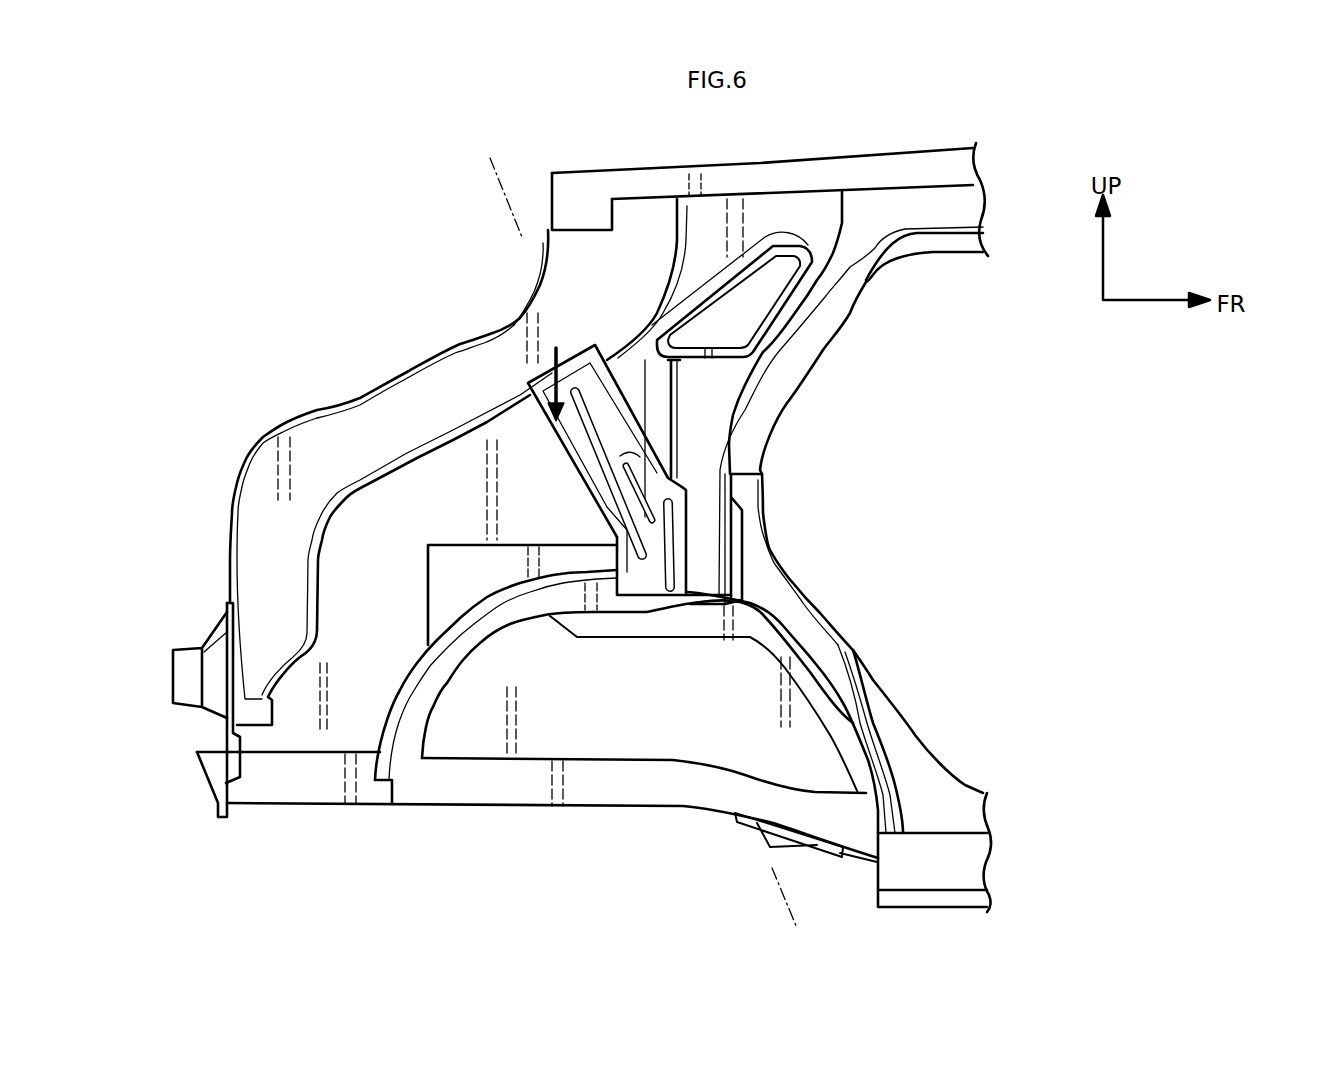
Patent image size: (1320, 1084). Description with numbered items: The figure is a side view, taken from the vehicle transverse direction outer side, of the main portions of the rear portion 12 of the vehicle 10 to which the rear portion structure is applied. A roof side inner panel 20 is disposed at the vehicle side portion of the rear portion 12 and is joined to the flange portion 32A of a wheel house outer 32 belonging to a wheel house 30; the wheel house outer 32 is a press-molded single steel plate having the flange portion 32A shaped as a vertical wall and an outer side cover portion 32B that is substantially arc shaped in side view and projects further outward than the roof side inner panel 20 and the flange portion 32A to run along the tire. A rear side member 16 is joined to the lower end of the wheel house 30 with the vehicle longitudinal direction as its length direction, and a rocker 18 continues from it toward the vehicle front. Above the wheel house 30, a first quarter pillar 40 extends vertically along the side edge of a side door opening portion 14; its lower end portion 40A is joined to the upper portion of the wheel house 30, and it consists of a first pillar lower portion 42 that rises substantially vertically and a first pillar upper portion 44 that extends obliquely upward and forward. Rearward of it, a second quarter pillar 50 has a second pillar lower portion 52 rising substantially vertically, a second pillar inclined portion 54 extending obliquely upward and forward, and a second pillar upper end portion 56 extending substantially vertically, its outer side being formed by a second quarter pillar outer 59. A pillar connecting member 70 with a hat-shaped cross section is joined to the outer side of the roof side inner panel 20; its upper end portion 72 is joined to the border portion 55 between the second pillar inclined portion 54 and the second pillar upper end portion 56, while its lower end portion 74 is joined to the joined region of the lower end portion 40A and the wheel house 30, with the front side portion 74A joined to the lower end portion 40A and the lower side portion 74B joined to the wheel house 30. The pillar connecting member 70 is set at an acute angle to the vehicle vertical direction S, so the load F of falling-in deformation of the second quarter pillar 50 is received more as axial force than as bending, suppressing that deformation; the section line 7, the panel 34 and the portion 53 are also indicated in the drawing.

The section line 7- 7 is at (508, 175).
The vehicle 10 is at (1065, 99).
The rear portion 12 is at (883, 127).
The side door opening portion 14 is at (962, 352).
The rear side member 16 is at (538, 800).
The rocker 18 is at (982, 861).
The roof side inner panel 20 is at (423, 460).
The wheel house 30 is at (653, 684).
The wheel house outer 32 is at (536, 627).
The flange portion 32A is at (443, 604).
The outer side cover portion 32B is at (473, 653).
The rocker panel 34 is at (623, 748).
The first quarter pillar 40 is at (719, 405).
The lower end portion 40A is at (704, 574).
The first pillar lower portion 42 is at (709, 440).
The first pillar upper portion 44 is at (823, 297).
The second quarter pillar 50 is at (311, 408).
The second pillar lower portion 52 is at (260, 537).
The frame corner portion 53 is at (257, 480).
The second pillar inclined portion 54 is at (460, 380).
The border portion 55 is at (527, 360).
The second pillar upper end portion 56 is at (570, 248).
The second quarter pillar outer 59 is at (313, 443).
The pillar connecting member 70 is at (668, 479).
The upper end portion 72 is at (572, 362).
The lower end portion 74 is at (747, 603).
The side portion 74A is at (689, 528).
The side portion 74B is at (653, 612).
The vehicle vertical direction S is at (647, 370).
The load F is at (530, 393).